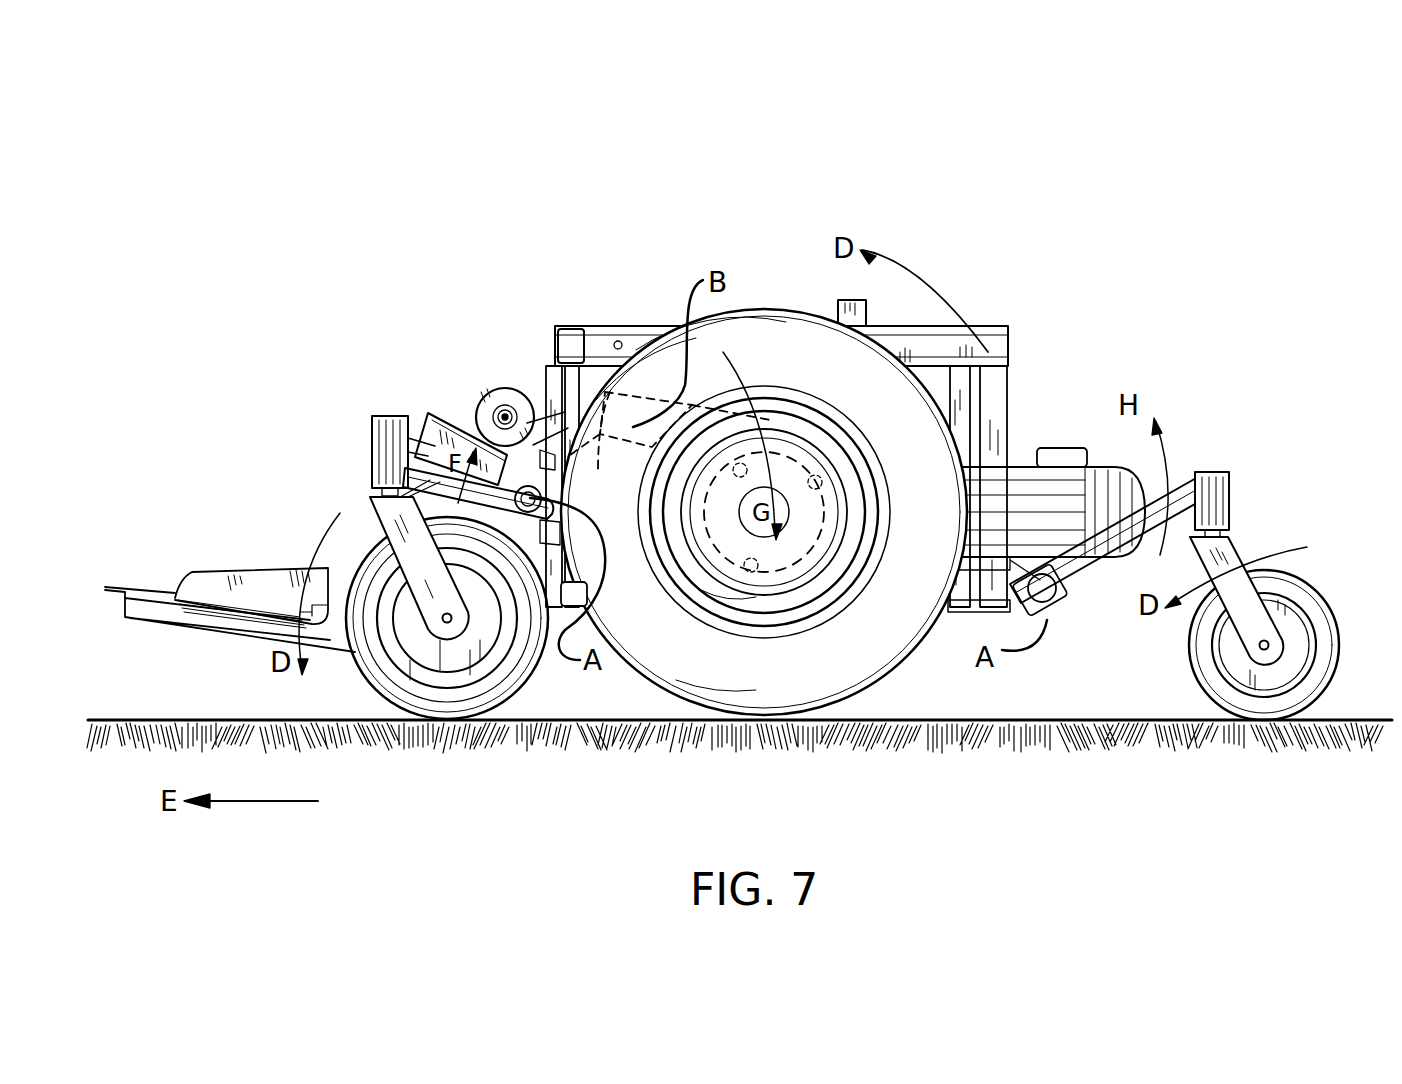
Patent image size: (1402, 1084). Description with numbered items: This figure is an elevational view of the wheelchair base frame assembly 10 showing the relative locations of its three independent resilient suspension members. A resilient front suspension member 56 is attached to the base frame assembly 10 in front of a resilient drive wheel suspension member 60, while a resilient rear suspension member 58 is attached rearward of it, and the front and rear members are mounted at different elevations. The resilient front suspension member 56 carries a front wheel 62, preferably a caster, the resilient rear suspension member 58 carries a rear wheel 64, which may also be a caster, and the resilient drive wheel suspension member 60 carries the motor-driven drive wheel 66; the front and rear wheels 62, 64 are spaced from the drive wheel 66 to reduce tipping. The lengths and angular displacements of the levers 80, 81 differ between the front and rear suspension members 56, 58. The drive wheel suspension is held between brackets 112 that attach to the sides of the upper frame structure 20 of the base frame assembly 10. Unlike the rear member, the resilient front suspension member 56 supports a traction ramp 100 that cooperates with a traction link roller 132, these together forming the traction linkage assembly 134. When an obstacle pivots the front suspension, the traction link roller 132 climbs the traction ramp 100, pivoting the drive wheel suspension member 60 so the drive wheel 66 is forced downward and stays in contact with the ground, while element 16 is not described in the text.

The base frame assembly 10 is at (358, 223).
The front caster wheel assembly 16 is at (240, 374).
The upper frame structure 20 is at (568, 292).
The resilient front suspension member 56 is at (345, 450).
The resilient rear suspension member 58 is at (1262, 478).
The resilient drive wheel suspension member 60 is at (590, 382).
The front wheel 62 is at (393, 684).
The rear wheel 64 is at (1228, 680).
The drive wheel 66 is at (680, 673).
The lever 80 is at (1190, 502).
The lever 81 is at (403, 468).
The traction ramp 100 is at (440, 398).
The bracket 112 is at (630, 348).
The traction link roller 132 is at (505, 392).
The traction linkage assembly 134 is at (462, 395).